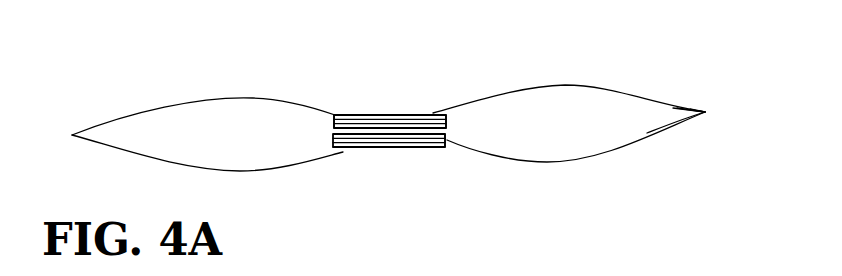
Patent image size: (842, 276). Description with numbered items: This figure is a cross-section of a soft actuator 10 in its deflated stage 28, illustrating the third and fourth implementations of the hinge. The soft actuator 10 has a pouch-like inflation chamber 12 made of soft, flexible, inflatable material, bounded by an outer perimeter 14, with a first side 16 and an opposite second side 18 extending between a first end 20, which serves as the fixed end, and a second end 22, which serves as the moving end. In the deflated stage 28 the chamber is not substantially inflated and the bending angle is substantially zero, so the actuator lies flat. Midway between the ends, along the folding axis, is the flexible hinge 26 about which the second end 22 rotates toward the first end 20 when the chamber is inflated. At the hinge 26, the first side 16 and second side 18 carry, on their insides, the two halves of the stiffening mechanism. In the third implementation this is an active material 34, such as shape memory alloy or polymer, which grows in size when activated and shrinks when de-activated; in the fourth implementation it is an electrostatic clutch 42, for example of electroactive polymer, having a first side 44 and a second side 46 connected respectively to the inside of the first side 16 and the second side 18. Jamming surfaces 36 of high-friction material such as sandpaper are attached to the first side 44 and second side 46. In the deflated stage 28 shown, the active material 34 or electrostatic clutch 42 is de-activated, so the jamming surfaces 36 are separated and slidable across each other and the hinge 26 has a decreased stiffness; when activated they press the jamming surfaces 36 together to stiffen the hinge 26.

The soft actuator 10 is at (675, 106).
The inflation chamber 12 is at (688, 107).
The outer perimeter 14 is at (646, 134).
The first side 16 is at (562, 85).
The second side 18 is at (562, 163).
The first end 20 is at (72, 135).
The second end 22 is at (677, 106).
The hinge 26 is at (383, 115).
The deflated stage 28 is at (189, 80).
The active material 34 is at (348, 115).
The jamming surfaces 36 is at (447, 126).
The electrostatic clutch 42 is at (342, 151).
The first side of the electrostatic clutch 44 is at (335, 114).
The second side of the electrostatic clutch 46 is at (367, 148).